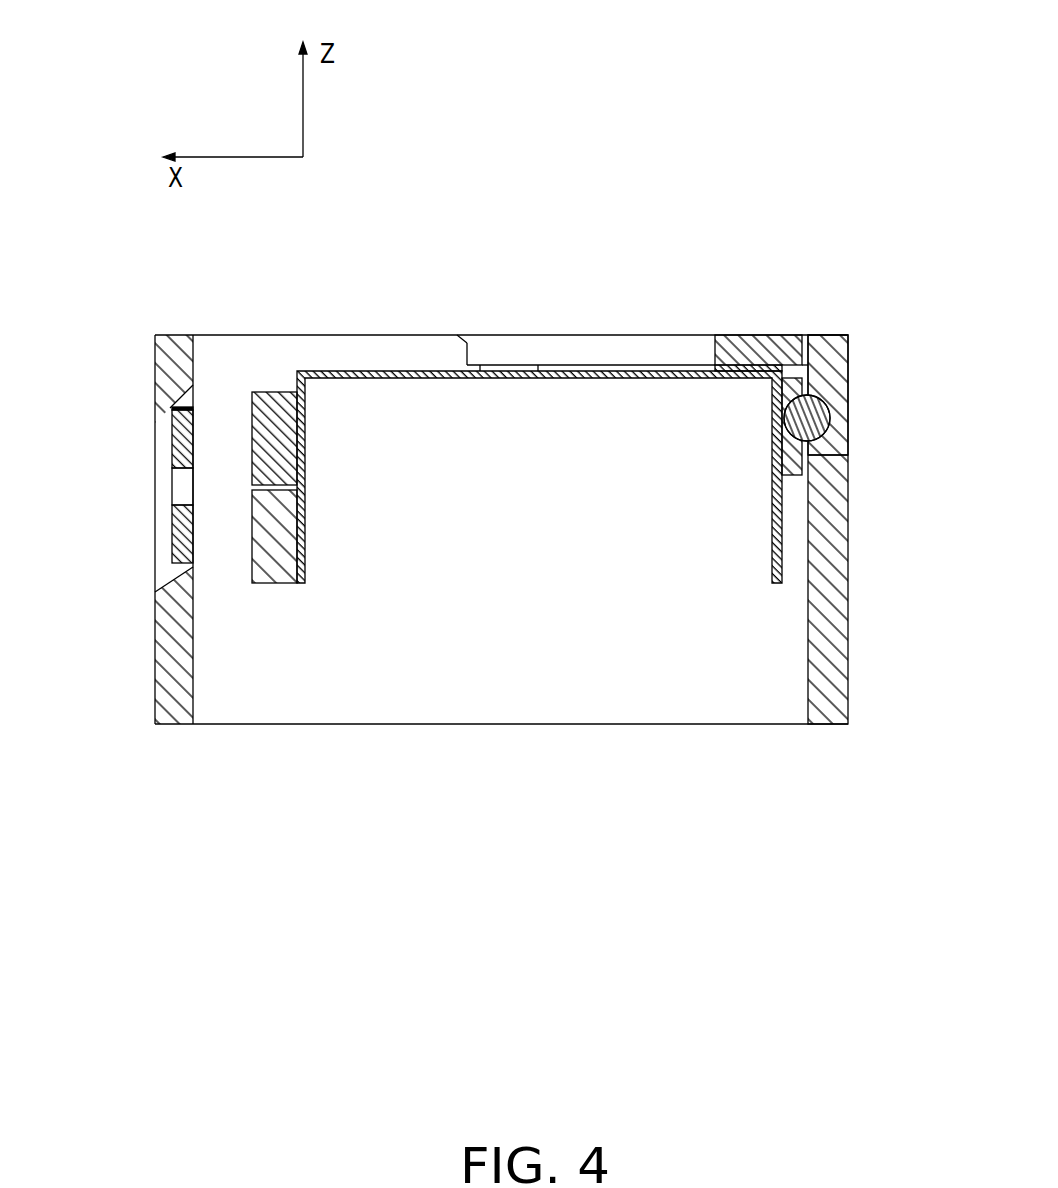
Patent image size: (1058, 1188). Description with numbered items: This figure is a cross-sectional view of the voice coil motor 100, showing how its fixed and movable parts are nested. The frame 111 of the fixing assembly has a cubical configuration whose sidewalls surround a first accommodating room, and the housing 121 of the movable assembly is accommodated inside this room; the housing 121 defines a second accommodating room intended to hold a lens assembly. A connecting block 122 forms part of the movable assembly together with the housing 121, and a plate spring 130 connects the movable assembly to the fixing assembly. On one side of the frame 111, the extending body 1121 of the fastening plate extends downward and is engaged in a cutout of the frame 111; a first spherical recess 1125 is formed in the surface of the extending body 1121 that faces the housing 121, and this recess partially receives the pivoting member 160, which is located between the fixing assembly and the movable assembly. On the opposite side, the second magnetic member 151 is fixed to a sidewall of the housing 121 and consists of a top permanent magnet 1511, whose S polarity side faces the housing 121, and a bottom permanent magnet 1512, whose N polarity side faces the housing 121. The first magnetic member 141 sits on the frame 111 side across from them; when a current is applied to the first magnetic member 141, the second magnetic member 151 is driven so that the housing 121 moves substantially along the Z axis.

The voice coil motor 100 is at (612, 234).
The frame 111 is at (825, 603).
The extending body 1121 is at (170, 367).
The first spherical recess 1125 is at (833, 442).
The first magnetic member 141 is at (175, 438).
The second magnetic member 151 is at (307, 277).
The top permanent magnet 1511 is at (267, 393).
The bottom permanent magnet 1512 is at (258, 500).
The housing 121 is at (775, 528).
The connecting block 122 is at (760, 350).
The plate spring 130 is at (740, 362).
The pivoting member 160 is at (807, 418).